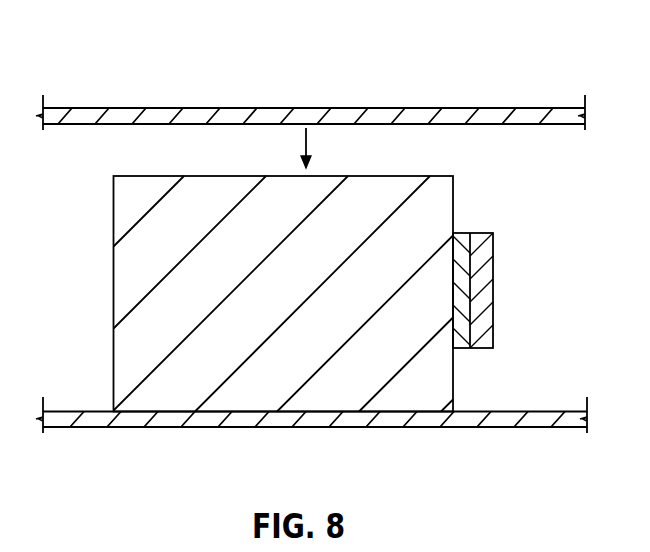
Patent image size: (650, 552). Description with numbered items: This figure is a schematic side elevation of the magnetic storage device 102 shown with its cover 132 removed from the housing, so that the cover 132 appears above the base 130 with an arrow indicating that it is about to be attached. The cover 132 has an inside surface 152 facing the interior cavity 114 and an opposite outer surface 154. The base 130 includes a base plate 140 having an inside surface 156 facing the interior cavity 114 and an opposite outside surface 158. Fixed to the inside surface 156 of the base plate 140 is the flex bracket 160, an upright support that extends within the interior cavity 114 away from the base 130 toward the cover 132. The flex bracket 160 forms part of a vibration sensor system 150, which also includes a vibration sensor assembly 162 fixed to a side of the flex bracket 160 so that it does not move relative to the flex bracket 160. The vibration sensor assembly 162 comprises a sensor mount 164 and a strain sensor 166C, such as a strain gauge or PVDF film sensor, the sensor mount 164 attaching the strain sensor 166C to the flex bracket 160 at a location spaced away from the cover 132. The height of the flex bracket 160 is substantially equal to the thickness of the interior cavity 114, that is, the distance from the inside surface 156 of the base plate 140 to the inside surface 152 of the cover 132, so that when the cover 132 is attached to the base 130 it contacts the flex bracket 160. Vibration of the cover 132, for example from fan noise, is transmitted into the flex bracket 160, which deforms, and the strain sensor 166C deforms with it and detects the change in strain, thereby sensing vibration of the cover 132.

The lid / cover plate 102 is at (475, 90).
The interior cavity 114 is at (94, 348).
The base 130 is at (181, 428).
The cover 132 is at (233, 108).
The base plate 140 is at (468, 428).
The vibration sensor system 150 is at (470, 203).
The inside surface of the cover 152 is at (391, 120).
The lid top surface 154 is at (427, 108).
The inside surface of the base plate 156 is at (553, 411).
The outside surface of the base plate 158 is at (543, 428).
The flex bracket 160 is at (460, 178).
The vibration sensor assembly 162 is at (523, 280).
The sensor mount 164 is at (461, 331).
The strain sensor 166C is at (484, 275).